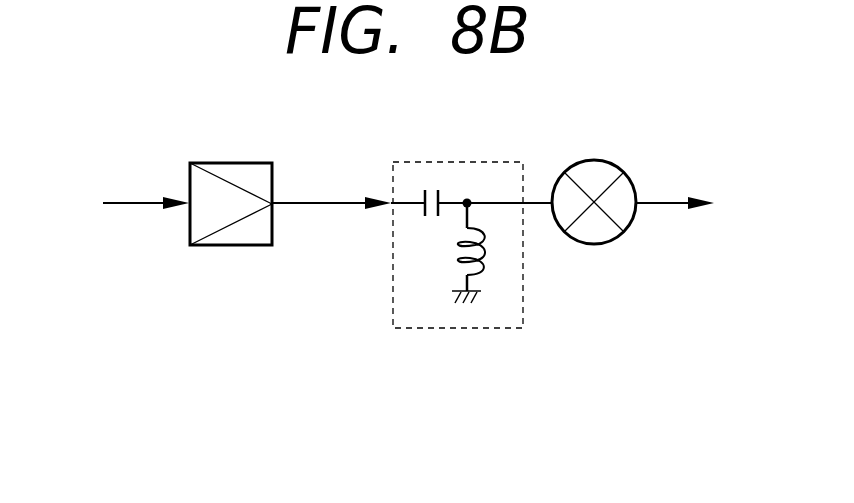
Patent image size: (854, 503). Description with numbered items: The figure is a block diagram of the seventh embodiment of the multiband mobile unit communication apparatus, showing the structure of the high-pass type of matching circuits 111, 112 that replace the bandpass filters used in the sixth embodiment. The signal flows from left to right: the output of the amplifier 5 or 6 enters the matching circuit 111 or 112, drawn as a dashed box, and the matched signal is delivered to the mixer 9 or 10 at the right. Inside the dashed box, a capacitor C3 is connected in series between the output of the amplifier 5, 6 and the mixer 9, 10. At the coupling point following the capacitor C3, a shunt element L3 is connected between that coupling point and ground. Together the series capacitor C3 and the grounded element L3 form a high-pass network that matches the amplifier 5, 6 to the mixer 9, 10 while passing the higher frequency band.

The amplifier 5 is at (241, 173).
The amplifier 6 is at (238, 163).
The mixer 9 is at (606, 170).
The mixer 10 is at (598, 158).
The high-pass type of matching circuit 111 is at (472, 215).
The high-pass type of matching circuit 112 is at (472, 215).
The capacitor C3 is at (428, 216).
The inductor L3 is at (455, 260).